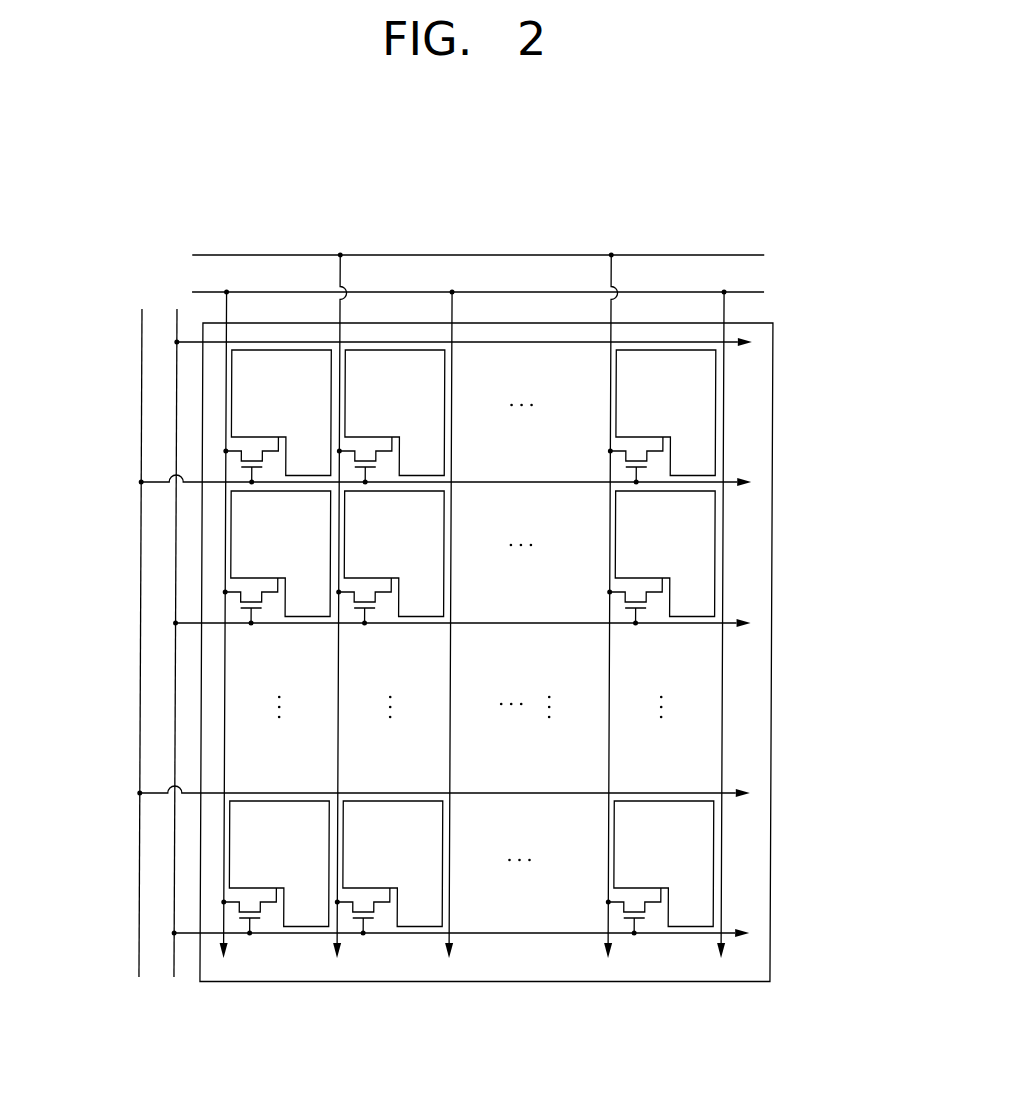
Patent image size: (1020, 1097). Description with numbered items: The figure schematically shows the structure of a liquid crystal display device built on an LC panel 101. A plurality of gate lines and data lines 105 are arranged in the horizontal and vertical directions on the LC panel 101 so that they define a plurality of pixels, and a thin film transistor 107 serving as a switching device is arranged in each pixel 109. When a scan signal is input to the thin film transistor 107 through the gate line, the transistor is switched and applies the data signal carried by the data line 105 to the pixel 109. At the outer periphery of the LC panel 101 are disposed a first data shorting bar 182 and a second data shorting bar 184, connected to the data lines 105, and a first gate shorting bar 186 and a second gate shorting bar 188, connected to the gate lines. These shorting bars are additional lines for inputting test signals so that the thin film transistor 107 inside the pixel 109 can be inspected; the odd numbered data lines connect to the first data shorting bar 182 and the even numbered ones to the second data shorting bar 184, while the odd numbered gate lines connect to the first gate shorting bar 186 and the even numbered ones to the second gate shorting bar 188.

The LC panel 101 is at (621, 988).
The data line 105 is at (535, 937).
The thin film transistor 107 is at (306, 912).
The pixel 109 is at (450, 905).
The first data shorting bar 182 is at (696, 291).
The second data shorting bar 184 is at (657, 254).
The first gate shorting bar 186 is at (177, 391).
The second gate shorting bar 188 is at (142, 445).